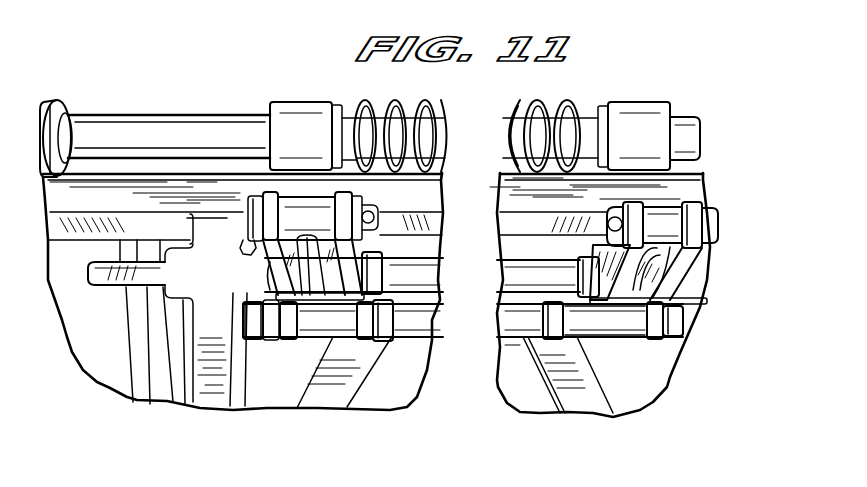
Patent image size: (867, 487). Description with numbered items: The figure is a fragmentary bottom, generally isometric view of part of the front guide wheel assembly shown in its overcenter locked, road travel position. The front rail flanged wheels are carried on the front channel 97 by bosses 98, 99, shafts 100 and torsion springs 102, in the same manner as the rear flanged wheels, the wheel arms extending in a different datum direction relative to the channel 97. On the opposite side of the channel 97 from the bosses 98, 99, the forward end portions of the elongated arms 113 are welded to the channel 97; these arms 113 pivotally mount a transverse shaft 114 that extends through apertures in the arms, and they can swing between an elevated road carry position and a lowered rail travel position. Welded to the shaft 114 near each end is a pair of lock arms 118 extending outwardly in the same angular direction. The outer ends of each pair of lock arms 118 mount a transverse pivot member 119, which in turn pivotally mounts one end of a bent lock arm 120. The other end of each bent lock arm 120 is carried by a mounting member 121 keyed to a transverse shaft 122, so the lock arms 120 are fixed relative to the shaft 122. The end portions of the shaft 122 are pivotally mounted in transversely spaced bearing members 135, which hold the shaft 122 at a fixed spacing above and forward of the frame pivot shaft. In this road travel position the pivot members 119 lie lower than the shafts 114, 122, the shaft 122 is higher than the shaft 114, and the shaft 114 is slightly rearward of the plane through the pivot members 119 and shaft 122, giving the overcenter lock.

The front channel 97 is at (675, 195).
The boss 98 is at (70, 106).
The boss 99 is at (295, 113).
The shaft 100 is at (222, 130).
The torsion spring 102 is at (397, 103).
The elongated arm 113 is at (213, 397).
The transverse shaft 114 is at (527, 277).
The lock arm 118 is at (282, 251).
The transverse pivot member 119 is at (378, 212).
The bent lock arm 120 is at (672, 228).
The mounting member 121 is at (617, 332).
The transverse shaft 122 is at (468, 356).
The bearing member 135 is at (252, 330).